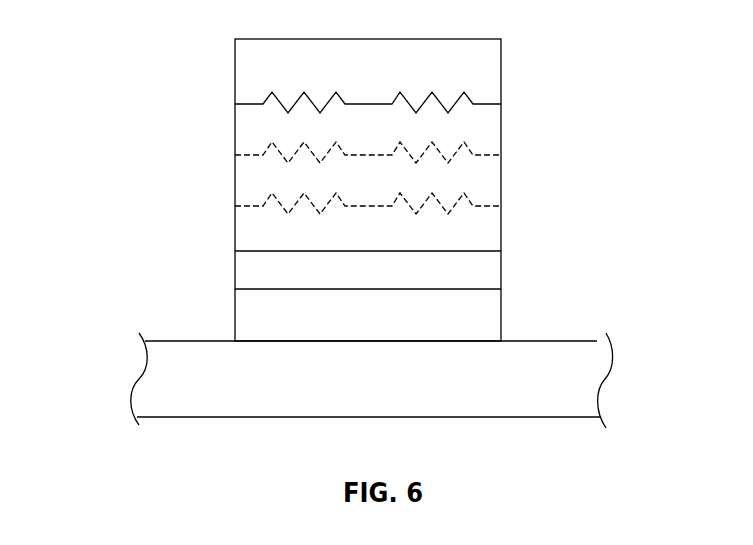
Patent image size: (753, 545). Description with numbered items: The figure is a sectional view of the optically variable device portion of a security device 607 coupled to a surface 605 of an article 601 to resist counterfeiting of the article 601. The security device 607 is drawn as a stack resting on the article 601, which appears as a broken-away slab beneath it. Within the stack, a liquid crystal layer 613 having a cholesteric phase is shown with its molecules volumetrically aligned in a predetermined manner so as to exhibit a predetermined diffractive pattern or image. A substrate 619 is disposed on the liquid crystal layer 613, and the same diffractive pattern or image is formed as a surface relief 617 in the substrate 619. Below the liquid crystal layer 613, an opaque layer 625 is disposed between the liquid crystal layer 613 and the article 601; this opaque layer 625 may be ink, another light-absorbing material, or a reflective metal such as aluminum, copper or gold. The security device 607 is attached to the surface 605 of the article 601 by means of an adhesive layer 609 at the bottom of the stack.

The article 601 is at (357, 233).
The surface 605 is at (593, 338).
The security device 607 is at (360, 189).
The adhesive layer 609 is at (502, 313).
The liquid crystal layer 613 is at (512, 104).
The surface relief 617 is at (264, 103).
The substrate 619 is at (502, 67).
The opaque layer 625 is at (502, 268).